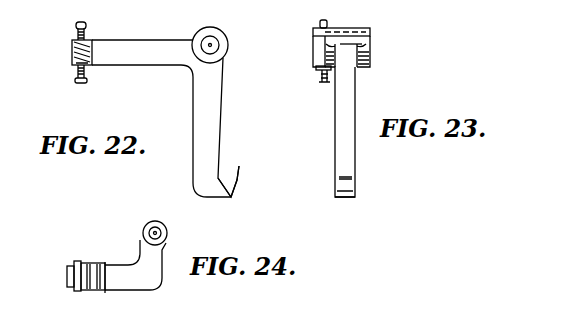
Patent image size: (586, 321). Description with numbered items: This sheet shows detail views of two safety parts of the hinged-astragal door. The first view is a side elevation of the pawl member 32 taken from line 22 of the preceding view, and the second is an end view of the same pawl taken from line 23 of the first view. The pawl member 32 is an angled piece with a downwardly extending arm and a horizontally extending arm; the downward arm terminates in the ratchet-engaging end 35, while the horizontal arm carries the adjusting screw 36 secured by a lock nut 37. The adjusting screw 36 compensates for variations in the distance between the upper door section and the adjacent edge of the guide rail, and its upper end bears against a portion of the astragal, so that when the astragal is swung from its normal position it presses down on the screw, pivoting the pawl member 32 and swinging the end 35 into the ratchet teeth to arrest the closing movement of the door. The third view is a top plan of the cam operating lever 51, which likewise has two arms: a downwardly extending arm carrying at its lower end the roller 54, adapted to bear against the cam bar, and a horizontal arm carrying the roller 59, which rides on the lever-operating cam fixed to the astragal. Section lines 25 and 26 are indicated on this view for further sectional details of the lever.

In FIG. 22, the section line 22- 22 is at (262, 2).
In FIG. 22, the section line 23- 23 is at (253, 208).
In FIG. 24, the section line 25- 25 is at (178, 302).
In FIG. 24, the section line 26- 26 is at (30, 318).
In FIG. 22, the pawl member 32 is at (132, 58).
In FIG. 23, the pawl member 32 is at (346, 132).
In FIG. 22, the ratchet-engaging end 35 is at (232, 172).
In FIG. 23, the ratchet-engaging end 35 is at (352, 195).
In FIG. 22, the adjusting screw 36 is at (86, 30).
In FIG. 23, the adjusting screw 36 is at (327, 21).
In FIG. 22, the lock nut 37 is at (73, 65).
In FIG. 23, the lock nut 37 is at (317, 68).
In FIG. 24, the cam operating lever 51 is at (118, 268).
In FIG. 24, the roller 54 is at (68, 272).
In FIG. 24, the roller 59 is at (167, 229).